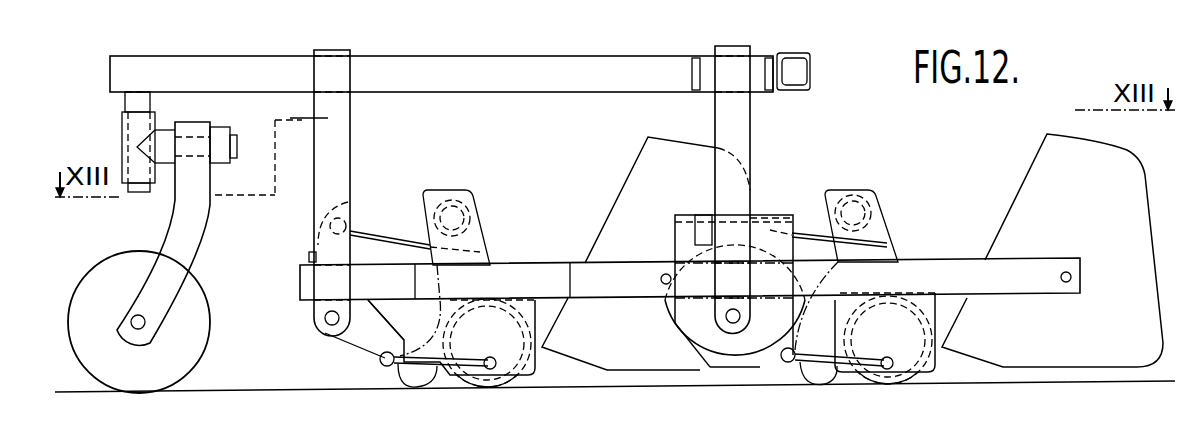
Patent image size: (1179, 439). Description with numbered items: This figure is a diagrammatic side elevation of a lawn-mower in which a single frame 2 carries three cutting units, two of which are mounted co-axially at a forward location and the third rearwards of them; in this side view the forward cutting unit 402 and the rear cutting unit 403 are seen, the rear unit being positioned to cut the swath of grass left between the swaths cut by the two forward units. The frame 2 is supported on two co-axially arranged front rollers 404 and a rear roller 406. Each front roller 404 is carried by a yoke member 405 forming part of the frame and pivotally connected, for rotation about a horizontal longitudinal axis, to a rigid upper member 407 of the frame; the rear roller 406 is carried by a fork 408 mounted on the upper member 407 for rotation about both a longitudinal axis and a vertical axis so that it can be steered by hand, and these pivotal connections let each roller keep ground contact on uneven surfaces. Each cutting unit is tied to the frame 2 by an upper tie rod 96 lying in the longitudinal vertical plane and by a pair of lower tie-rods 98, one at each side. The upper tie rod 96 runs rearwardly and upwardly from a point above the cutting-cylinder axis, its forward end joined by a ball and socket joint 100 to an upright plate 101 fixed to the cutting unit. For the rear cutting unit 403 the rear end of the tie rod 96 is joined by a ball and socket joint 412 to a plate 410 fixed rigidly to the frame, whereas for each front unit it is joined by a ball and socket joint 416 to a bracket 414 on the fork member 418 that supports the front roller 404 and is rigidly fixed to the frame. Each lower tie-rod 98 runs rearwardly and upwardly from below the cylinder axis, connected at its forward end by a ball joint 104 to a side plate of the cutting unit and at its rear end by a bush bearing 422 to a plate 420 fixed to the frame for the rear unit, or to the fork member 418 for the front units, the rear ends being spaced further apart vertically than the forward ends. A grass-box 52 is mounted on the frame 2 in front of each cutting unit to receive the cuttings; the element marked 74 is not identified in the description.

The frame 2 is at (636, 82).
The grass-box 52 is at (648, 157).
The hook 74 is at (421, 372).
The upper tie rod 96 is at (390, 245).
The lower tie-rod 98 is at (428, 362).
The ball and socket joint 100 is at (492, 250).
The upright plate 101 is at (500, 272).
The ball joint 104 is at (488, 360).
The cutting unit 402 is at (915, 355).
The cutting unit 403 is at (520, 355).
The front roller 404 is at (756, 374).
The yoke member 405 is at (743, 124).
The rear roller 406 is at (195, 313).
The upper member 407 is at (472, 65).
The fork 408 is at (192, 243).
The plate 410 is at (308, 258).
The ball and socket joint 412 is at (340, 214).
The bracket 414 is at (720, 218).
The ball and socket joint 416 is at (745, 226).
The fork member 418 is at (690, 336).
The plate 420 is at (363, 348).
The bush bearing 422 is at (392, 362).